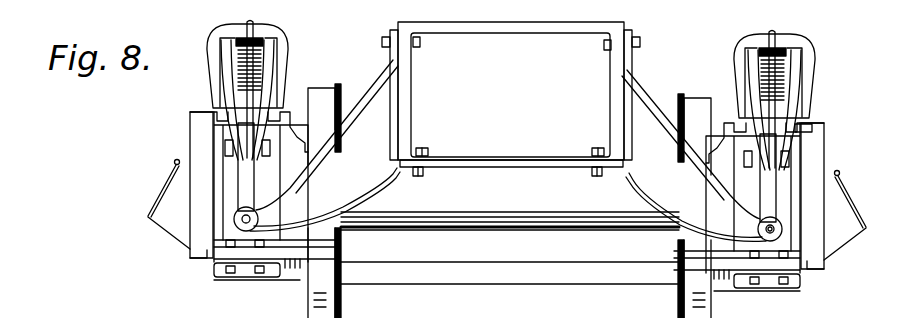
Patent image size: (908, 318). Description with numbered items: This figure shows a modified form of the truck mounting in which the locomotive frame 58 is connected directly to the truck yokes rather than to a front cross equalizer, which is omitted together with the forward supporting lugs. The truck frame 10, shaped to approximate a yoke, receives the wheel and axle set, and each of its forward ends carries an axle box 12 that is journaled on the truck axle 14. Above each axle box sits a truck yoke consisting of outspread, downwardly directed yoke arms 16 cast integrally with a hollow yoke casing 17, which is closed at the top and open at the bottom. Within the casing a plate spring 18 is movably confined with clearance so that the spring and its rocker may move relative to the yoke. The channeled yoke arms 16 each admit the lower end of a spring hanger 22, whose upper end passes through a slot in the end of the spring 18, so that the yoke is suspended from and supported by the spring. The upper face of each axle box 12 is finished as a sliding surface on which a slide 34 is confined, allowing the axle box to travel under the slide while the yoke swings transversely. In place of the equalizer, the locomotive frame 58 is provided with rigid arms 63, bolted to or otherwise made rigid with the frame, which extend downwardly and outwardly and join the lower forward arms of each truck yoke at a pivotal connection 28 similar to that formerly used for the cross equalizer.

The truck frame 10 is at (248, 277).
The axle box 12 is at (197, 128).
The truck axle 14 is at (538, 222).
The yoke arms 16 is at (246, 176).
The yoke casing 17 is at (213, 51).
The plate spring 18 is at (258, 50).
The spring hanger 22 is at (250, 98).
The pivotal connection 28 is at (770, 233).
The slide 34 is at (805, 130).
The locomotive frame 58 is at (489, 33).
The rigid arms 63 is at (375, 110).